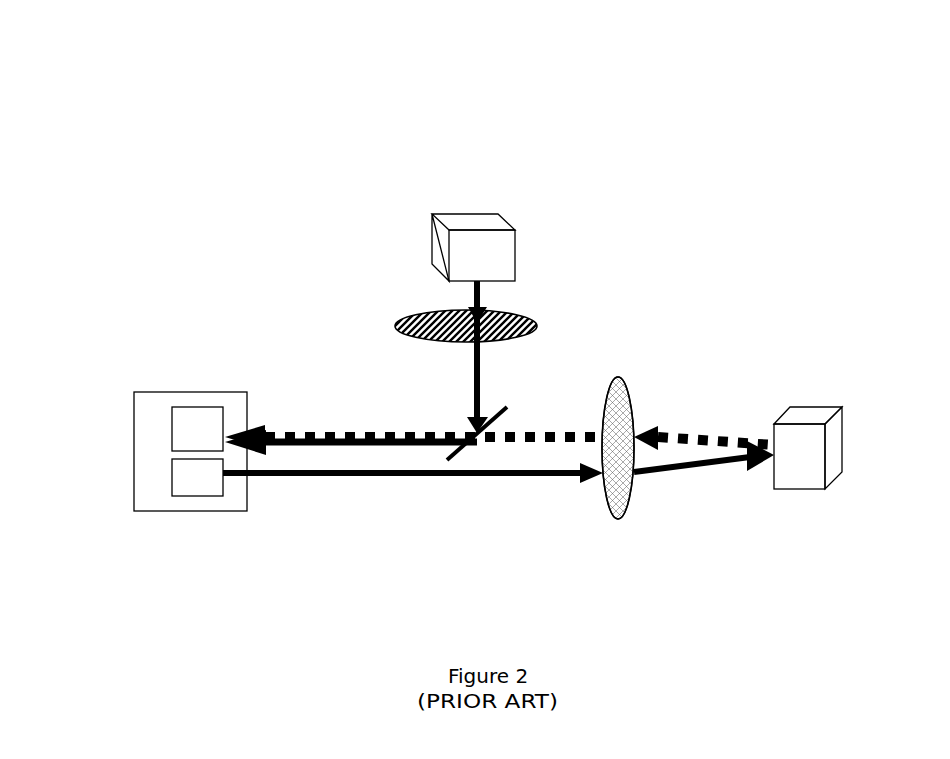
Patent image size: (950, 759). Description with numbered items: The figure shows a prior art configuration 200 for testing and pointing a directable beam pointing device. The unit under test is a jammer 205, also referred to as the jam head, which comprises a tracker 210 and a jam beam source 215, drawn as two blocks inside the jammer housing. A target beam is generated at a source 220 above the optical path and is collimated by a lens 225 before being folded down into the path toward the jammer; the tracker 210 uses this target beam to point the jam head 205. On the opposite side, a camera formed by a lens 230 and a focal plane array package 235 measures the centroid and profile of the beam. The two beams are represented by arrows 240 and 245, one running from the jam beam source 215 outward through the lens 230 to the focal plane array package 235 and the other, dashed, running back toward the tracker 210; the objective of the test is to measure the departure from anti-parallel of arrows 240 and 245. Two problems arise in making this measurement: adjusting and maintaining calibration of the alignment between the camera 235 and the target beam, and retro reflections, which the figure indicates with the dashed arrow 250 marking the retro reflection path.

The prior art configuration 200 is at (67, 49).
The jammer 205 is at (133, 445).
The tracker 210 is at (194, 406).
The jam beam source 215 is at (198, 497).
The source 220 is at (431, 246).
The lens 225 is at (539, 323).
The lens 230 is at (634, 496).
The focal plane array package 235 is at (803, 406).
The arrow 240 is at (560, 478).
The arrow 245 is at (279, 427).
The arrow 250 is at (555, 427).